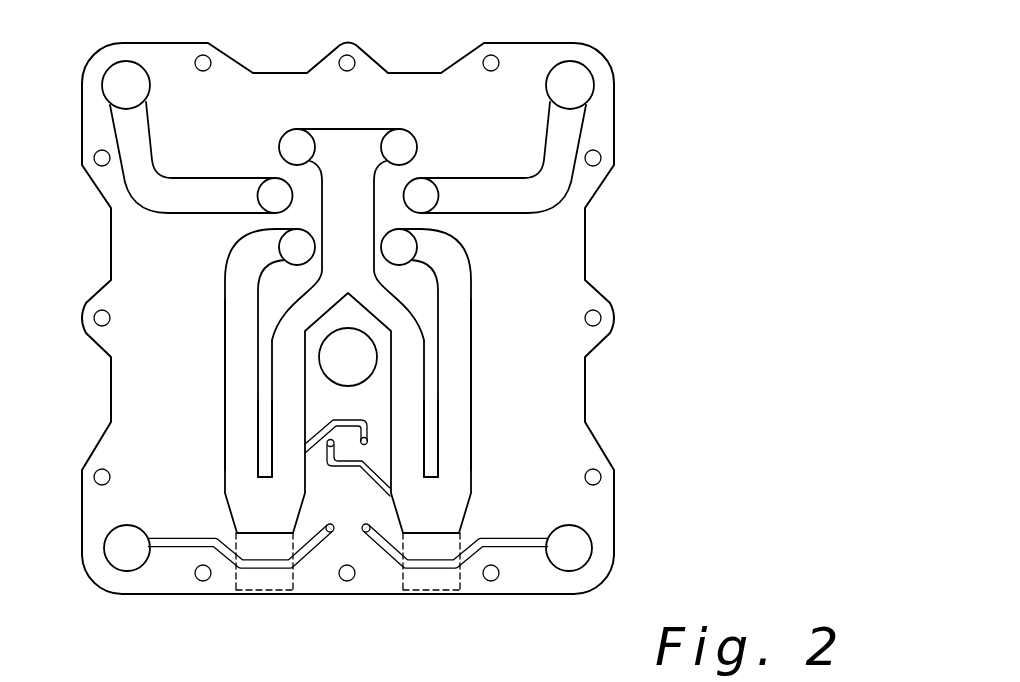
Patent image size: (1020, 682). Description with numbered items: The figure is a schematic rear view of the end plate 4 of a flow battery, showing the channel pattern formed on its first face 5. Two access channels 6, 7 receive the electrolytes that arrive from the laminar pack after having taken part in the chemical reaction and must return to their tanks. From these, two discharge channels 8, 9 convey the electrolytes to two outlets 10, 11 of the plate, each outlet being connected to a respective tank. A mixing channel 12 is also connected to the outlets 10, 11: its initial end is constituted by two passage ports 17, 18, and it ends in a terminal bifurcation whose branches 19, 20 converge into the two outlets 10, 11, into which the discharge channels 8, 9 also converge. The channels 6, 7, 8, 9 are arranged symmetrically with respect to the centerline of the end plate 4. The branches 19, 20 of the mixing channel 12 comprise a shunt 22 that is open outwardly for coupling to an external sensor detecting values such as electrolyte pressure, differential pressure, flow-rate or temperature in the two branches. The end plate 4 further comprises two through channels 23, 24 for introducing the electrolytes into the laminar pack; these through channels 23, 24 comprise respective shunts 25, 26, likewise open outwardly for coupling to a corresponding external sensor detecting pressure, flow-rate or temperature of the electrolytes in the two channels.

The end plate 4 is at (662, 56).
The first face 5 is at (560, 395).
The access channel 6 is at (128, 137).
The access channel 7 is at (568, 123).
The discharge channel 8 is at (238, 367).
The discharge channel 9 is at (457, 303).
The outlet 10 is at (262, 588).
The outlet 11 is at (423, 595).
The mixing channel 12 is at (347, 167).
The passage port 17 is at (288, 139).
The passage port 18 is at (400, 147).
The branch 19 is at (283, 440).
The branch 20 is at (408, 430).
The shunt 22 is at (348, 418).
The through channel 23 is at (122, 557).
The through channel 24 is at (566, 556).
The shunt 25 is at (311, 549).
The shunt 26 is at (378, 551).